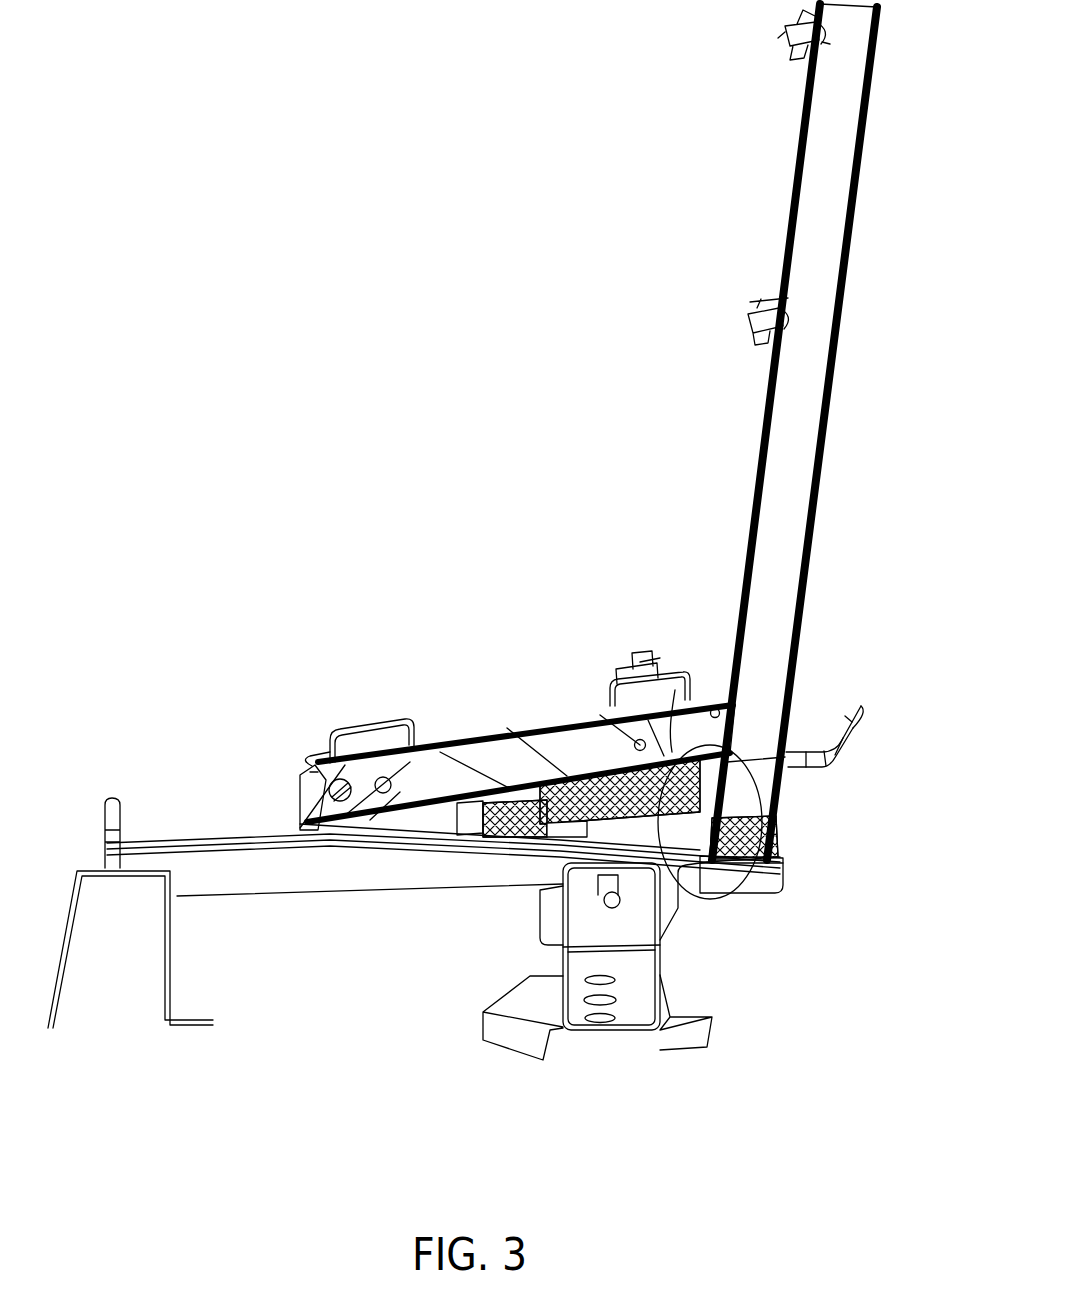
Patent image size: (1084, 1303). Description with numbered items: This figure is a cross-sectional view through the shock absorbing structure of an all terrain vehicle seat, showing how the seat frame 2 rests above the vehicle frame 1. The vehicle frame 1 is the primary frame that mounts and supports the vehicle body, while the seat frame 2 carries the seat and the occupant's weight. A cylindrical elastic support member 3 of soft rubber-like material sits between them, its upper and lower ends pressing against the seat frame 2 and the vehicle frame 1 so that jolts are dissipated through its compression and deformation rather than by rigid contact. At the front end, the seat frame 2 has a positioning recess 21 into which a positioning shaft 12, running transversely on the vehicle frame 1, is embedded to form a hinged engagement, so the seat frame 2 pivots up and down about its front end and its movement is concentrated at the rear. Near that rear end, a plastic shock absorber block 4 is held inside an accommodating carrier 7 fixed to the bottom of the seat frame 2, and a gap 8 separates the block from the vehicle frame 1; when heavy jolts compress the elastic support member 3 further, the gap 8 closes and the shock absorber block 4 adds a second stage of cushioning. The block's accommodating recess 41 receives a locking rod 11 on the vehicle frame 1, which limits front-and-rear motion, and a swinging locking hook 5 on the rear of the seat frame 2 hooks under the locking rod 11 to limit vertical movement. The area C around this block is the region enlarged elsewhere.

The vehicle frame 1 is at (445, 873).
The seat frame 2 is at (772, 590).
The elastic support member 3 is at (323, 760).
The shock absorber block 4 is at (587, 785).
The locking hook 5 is at (690, 823).
The accommodating carrier 7 is at (515, 770).
The gap 8 is at (610, 905).
The locking rod 11 is at (760, 805).
The positioning shaft 12 is at (335, 815).
The positioning recess 21 is at (307, 788).
The accommodating recess 41 is at (645, 676).
The area C is at (757, 762).